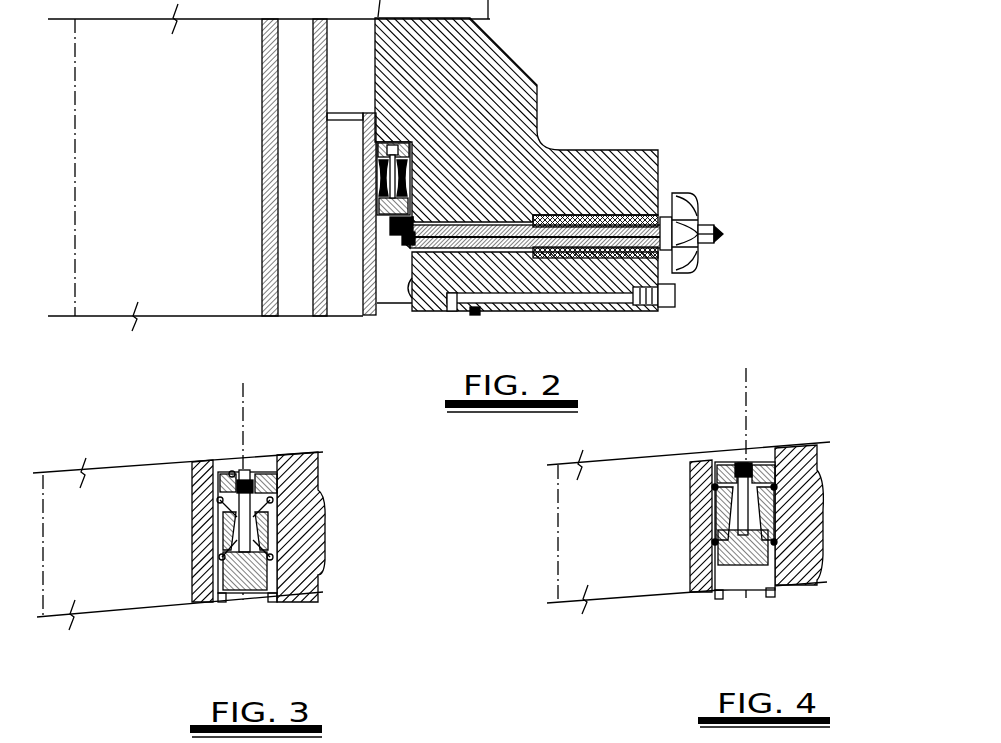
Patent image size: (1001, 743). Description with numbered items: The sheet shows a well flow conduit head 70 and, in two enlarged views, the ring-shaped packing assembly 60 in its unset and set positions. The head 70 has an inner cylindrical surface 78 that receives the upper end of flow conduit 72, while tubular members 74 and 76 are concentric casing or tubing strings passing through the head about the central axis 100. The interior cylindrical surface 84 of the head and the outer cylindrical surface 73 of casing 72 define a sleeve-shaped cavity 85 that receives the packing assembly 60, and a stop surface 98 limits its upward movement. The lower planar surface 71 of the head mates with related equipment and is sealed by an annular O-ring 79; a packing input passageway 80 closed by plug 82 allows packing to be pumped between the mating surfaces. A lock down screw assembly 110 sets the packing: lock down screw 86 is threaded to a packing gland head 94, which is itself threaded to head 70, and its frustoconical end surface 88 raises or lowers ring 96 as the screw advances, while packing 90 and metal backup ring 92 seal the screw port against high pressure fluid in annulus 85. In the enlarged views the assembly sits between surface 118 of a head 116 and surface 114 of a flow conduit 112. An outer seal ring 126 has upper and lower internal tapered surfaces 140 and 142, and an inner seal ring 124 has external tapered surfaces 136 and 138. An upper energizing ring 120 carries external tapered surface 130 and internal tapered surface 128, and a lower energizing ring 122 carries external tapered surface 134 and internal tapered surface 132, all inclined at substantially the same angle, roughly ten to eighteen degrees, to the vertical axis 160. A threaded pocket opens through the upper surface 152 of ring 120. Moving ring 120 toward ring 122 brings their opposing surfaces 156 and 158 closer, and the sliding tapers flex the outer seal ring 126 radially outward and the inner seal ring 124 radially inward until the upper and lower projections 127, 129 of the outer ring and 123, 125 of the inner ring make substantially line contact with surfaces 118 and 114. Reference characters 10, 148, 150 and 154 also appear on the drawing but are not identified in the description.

In FIG. 4, the coupling assembly 10 is at (713, 613).
In FIG. 2, the packing assembly 60 is at (350, 192).
In FIG. 3, the packing assembly 60 is at (267, 610).
In FIG. 2, the flow conduit head 70 is at (495, 70).
In FIG. 2, the lower planar surface 71 is at (552, 313).
In FIG. 2, the flow conduit 72 is at (373, 300).
In FIG. 2, the internal cylindrical surface 73 is at (378, 298).
In FIG. 2, the tubular member 74 is at (313, 305).
In FIG. 2, the tubular member 76 is at (270, 288).
In FIG. 2, the inner cylindrical surface 78 is at (368, 88).
In FIG. 2, the annular O-ring 79 is at (477, 315).
In FIG. 2, the packing input passageway 80 is at (585, 298).
In FIG. 2, the plug 82 is at (676, 296).
In FIG. 2, the cylindrical surface 84 is at (438, 300).
In FIG. 2, the sleeve-shaped cavity 85 is at (362, 298).
In FIG. 2, the lock down screw 86 is at (540, 258).
In FIG. 2, the frustoconical end surface 88 is at (412, 240).
In FIG. 2, the packing 90 is at (607, 255).
In FIG. 2, the metal backup ring 92 is at (667, 247).
In FIG. 2, the packing gland head 94 is at (683, 205).
In FIG. 2, the ring 96 is at (378, 212).
In FIG. 2, the stop surface 98 is at (366, 153).
In FIG. 2, the central axis 100 is at (77, 124).
In FIG. 3, the central axis 100 is at (40, 578).
In FIG. 4, the central axis 100 is at (557, 568).
In FIG. 2, the lock down screw assembly 110 is at (668, 178).
In FIG. 3, the lock down screw assembly 110 is at (293, 513).
In FIG. 3, the flow conduit 112 is at (193, 598).
In FIG. 3, the surface of flow conduit 114 is at (220, 598).
In FIG. 4, the surface of flow conduit 114 is at (720, 592).
In FIG. 3, the head 116 is at (300, 597).
In FIG. 3, the surface of head 118 is at (273, 595).
In FIG. 4, the surface of head 118 is at (773, 590).
In FIG. 3, the upper energizing ring 120 is at (290, 460).
In FIG. 4, the upper energizing ring 120 is at (775, 492).
In FIG. 3, the lower energizing ring 122 is at (278, 578).
In FIG. 4, the lower energizing ring 122 is at (775, 586).
In FIG. 4, the upper projection 123 is at (690, 465).
In FIG. 3, the inner seal ring 124 is at (230, 523).
In FIG. 4, the inner seal ring 124 is at (720, 533).
In FIG. 4, the lower projection 125 is at (712, 553).
In FIG. 3, the outer seal ring 126 is at (268, 535).
In FIG. 4, the outer seal ring 126 is at (773, 540).
In FIG. 3, the upper projection 127 is at (277, 502).
In FIG. 4, the upper projection 127 is at (817, 460).
In FIG. 3, the sixth tapered surface 128 is at (222, 503).
In FIG. 4, the sixth tapered surface 128 is at (713, 487).
In FIG. 3, the lower projection 129 is at (273, 558).
In FIG. 4, the lower projection 129 is at (780, 560).
In FIG. 3, the fifth tapered surface 130 is at (227, 510).
In FIG. 4, the fifth tapered surface 130 is at (773, 488).
In FIG. 3, the eighth tapered surface 132 is at (233, 472).
In FIG. 4, the eighth tapered surface 132 is at (713, 543).
In FIG. 4, the seventh tapered surface 134 is at (815, 585).
In FIG. 4, the third tapered surface 136 is at (730, 507).
In FIG. 4, the fourth tapered surface 138 is at (730, 527).
In FIG. 4, the first tapered surface 140 is at (760, 510).
In FIG. 4, the second tapered surface 142 is at (767, 557).
In FIG. 3, the stud 148 is at (252, 530).
In FIG. 3, the O-ring 150 is at (222, 552).
In FIG. 3, the upper surface 152 is at (263, 470).
In FIG. 3, the bottom 154 is at (252, 588).
In FIG. 3, the opposing surface 156 is at (240, 530).
In FIG. 3, the opposing surface 158 is at (225, 565).
In FIG. 3, the axis 160 is at (242, 432).
In FIG. 4, the axis 160 is at (745, 420).